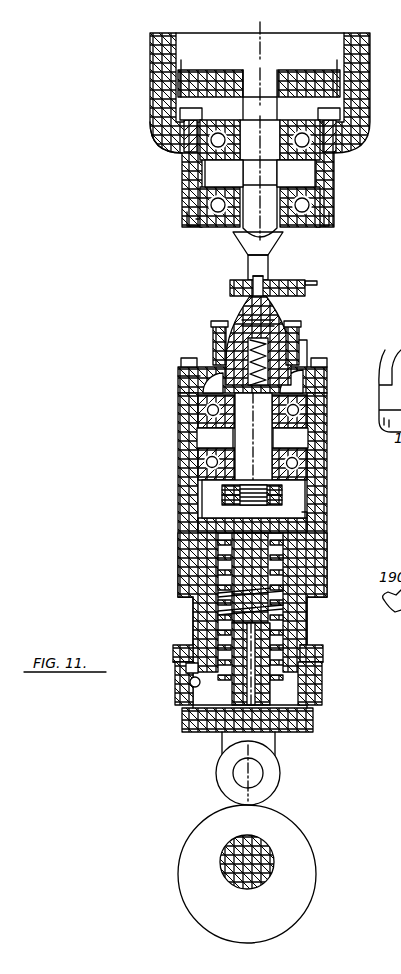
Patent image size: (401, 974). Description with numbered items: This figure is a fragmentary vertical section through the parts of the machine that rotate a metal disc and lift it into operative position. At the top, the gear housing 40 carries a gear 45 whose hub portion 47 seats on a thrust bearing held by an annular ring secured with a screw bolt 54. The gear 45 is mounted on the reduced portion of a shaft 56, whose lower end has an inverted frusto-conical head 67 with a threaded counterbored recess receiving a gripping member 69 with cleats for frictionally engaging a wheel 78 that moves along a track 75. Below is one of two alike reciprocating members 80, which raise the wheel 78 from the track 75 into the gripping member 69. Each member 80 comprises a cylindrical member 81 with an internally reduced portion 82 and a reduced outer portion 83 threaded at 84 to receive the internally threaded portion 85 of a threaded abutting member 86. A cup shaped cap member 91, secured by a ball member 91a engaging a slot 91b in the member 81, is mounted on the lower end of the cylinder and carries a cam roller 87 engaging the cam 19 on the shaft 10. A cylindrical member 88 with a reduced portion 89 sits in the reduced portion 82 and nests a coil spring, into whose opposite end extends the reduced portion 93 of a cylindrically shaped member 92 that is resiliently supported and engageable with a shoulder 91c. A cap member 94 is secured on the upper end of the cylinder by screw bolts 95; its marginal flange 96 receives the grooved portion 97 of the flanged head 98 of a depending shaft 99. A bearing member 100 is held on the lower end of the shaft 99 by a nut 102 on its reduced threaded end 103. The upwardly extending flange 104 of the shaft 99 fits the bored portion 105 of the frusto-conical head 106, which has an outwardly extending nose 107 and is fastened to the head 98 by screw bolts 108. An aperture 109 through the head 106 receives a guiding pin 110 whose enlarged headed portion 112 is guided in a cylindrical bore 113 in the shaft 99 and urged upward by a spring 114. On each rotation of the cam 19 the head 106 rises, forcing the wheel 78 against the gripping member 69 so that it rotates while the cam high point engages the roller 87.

The shaft 10 is at (238, 884).
The cam 19 is at (303, 846).
The gear housing 40 is at (152, 98).
The gear 45 is at (292, 77).
The hub portion 47 is at (222, 118).
The screw bolt 54 is at (182, 151).
The shaft 56 is at (230, 229).
The inverted frusto-conical shaped head 67 is at (240, 243).
The gripping member 69 is at (248, 268).
The track 75 is at (294, 281).
The wheel 78 is at (265, 281).
The reciprocating member 80 is at (342, 499).
The cylindrical member 81 is at (320, 472).
The internally reduced portion 82 is at (296, 565).
The reduced outer portion 83 is at (308, 621).
The thread 84 is at (304, 644).
The internally threaded portion 85 is at (323, 651).
The threaded abutting member 86 is at (322, 663).
The cam roller 87 is at (279, 765).
The cylindrical member 88 is at (184, 706).
The reduced portion 89 is at (222, 634).
The cup shaped cap member 91 is at (322, 693).
The ball member 91a is at (190, 682).
The slot 91b is at (186, 666).
The shoulder 91c is at (312, 519).
The cylindrically shaped member 92 is at (200, 513).
The reduced portion 93 is at (232, 566).
The cap member 94 is at (301, 381).
The screw bolt 95 is at (323, 362).
The marginal flange 96 is at (300, 350).
The grooved portion 97 is at (217, 366).
The flanged head 98 is at (199, 362).
The depending shaft 99 is at (240, 432).
The bearing member 100 is at (306, 456).
The nut 102 is at (275, 508).
The reduced threaded end 103 is at (224, 497).
The upwardly extending flange 104 is at (238, 346).
The bored portion 105 is at (240, 330).
The head 106 is at (268, 331).
The nose 107 is at (262, 303).
The screw bolt 108 is at (294, 330).
The aperture 109 is at (240, 299).
The guiding pin 110 is at (252, 293).
The enlarged headed portion 112 is at (240, 320).
The cylindrical bore 113 is at (215, 346).
The spring 114 is at (178, 376).